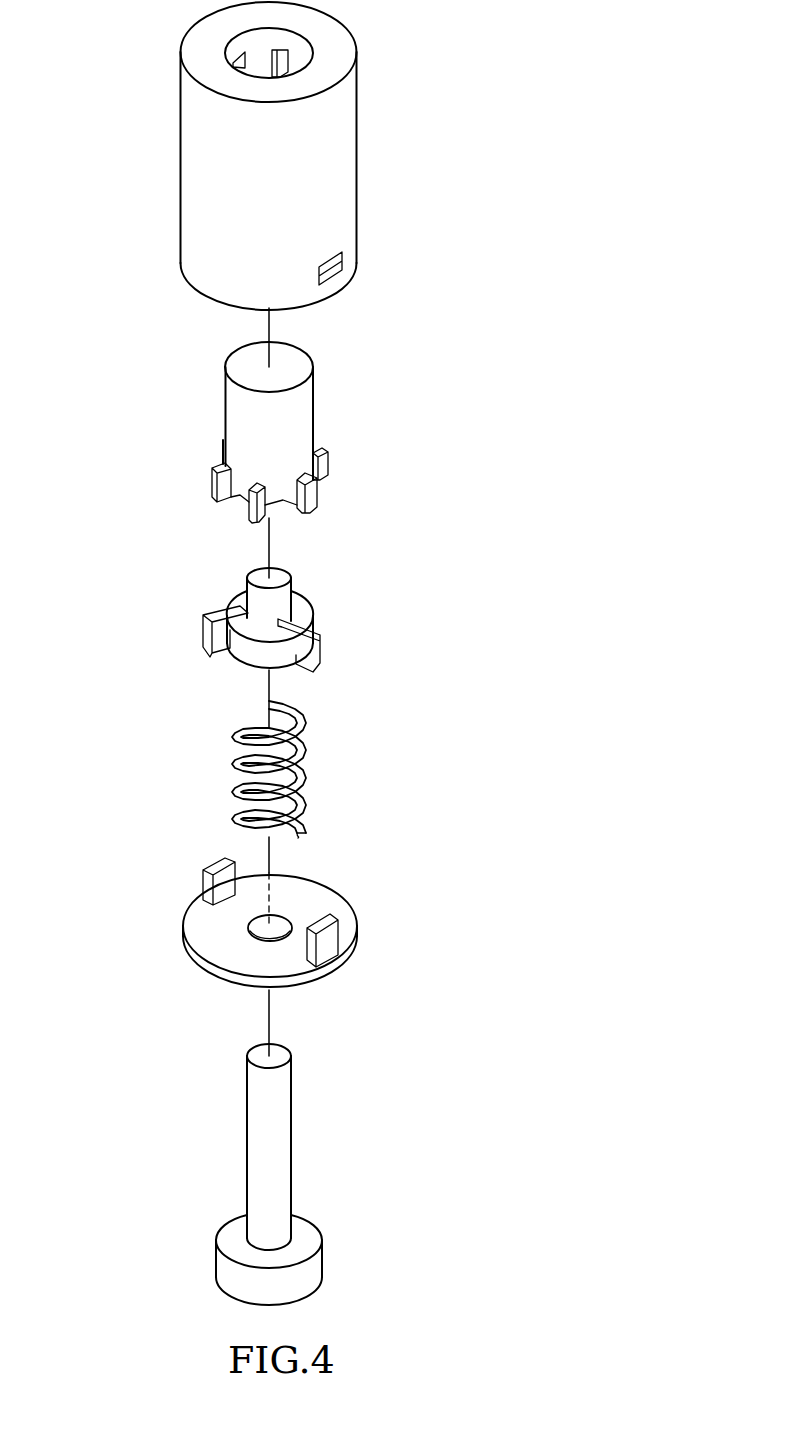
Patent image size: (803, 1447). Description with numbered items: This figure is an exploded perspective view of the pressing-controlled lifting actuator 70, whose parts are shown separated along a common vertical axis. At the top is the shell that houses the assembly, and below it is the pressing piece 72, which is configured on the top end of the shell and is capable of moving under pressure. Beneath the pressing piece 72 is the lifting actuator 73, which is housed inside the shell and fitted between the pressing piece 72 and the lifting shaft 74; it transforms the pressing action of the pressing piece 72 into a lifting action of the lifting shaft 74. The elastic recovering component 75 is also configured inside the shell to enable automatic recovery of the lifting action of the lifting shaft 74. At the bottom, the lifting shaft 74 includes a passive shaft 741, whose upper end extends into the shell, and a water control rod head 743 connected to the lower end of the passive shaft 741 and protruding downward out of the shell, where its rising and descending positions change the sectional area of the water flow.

The pressing-controlled lifting actuator 70 is at (105, 69).
The pressing piece 72 is at (300, 362).
The lifting actuator 73 is at (325, 522).
The lifting shaft 74 is at (310, 1174).
The passive shaft 741 is at (247, 1137).
The water control rod head 743 is at (317, 1267).
The elastic recovering component 75 is at (322, 756).